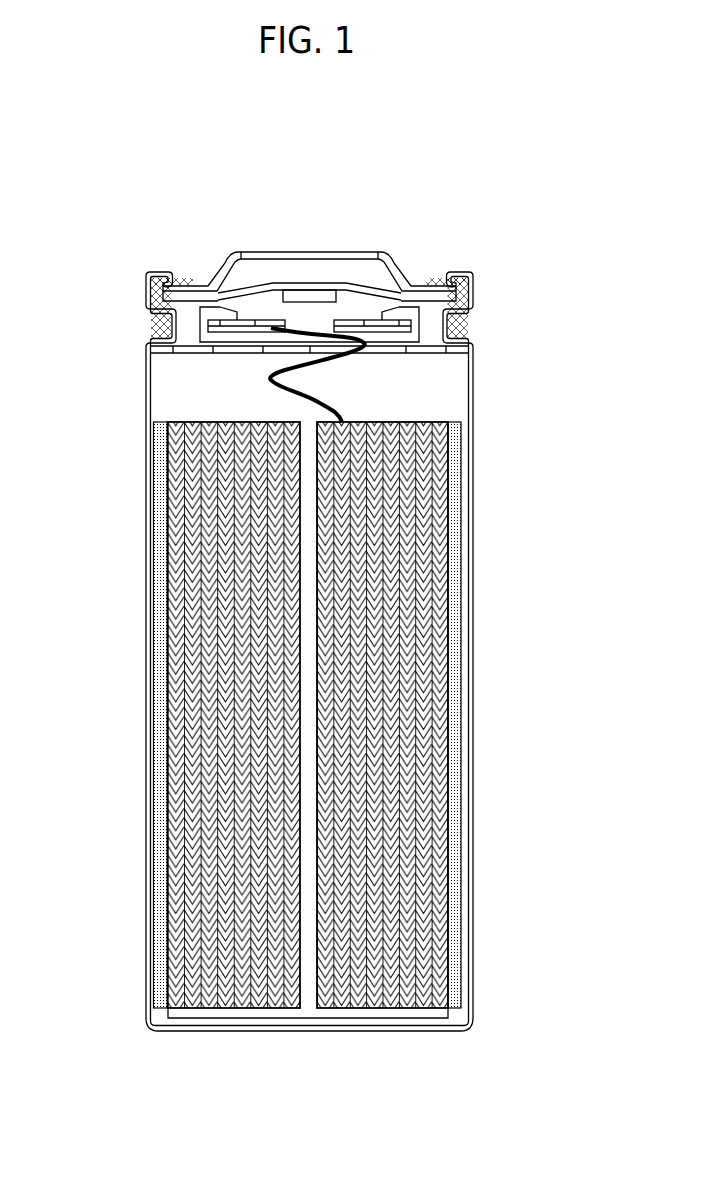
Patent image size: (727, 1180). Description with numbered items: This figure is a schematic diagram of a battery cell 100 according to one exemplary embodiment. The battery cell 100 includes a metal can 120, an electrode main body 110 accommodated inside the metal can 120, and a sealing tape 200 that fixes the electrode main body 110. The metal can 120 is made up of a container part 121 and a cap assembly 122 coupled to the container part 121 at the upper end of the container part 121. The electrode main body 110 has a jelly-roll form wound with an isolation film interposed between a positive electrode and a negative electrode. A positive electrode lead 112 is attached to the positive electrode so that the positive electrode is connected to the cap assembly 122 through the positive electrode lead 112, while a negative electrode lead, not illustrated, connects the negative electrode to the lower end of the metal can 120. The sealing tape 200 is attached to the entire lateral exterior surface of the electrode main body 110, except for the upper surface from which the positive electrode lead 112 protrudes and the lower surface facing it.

The battery cell 100 is at (108, 255).
The electrode main body 110 is at (191, 687).
The positive electrode lead 112 is at (270, 378).
The metal can 120 is at (475, 372).
The container part 121 is at (468, 412).
The cap assembly 122 is at (275, 253).
The sealing tape 200 is at (156, 557).